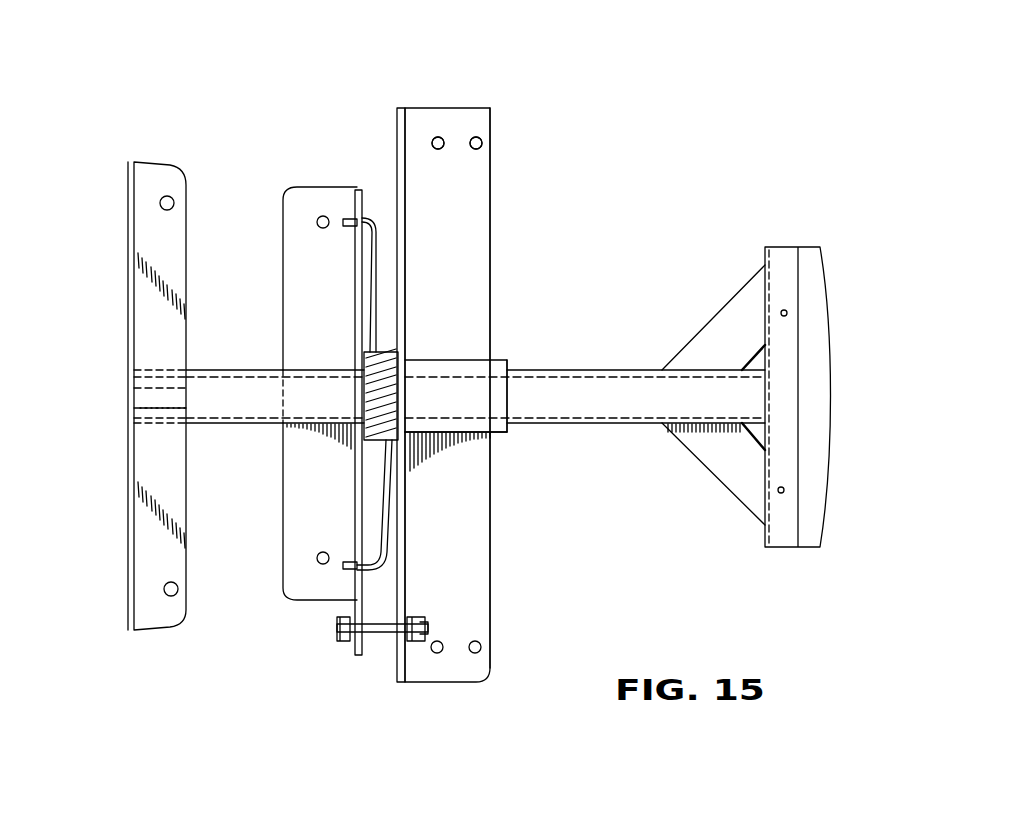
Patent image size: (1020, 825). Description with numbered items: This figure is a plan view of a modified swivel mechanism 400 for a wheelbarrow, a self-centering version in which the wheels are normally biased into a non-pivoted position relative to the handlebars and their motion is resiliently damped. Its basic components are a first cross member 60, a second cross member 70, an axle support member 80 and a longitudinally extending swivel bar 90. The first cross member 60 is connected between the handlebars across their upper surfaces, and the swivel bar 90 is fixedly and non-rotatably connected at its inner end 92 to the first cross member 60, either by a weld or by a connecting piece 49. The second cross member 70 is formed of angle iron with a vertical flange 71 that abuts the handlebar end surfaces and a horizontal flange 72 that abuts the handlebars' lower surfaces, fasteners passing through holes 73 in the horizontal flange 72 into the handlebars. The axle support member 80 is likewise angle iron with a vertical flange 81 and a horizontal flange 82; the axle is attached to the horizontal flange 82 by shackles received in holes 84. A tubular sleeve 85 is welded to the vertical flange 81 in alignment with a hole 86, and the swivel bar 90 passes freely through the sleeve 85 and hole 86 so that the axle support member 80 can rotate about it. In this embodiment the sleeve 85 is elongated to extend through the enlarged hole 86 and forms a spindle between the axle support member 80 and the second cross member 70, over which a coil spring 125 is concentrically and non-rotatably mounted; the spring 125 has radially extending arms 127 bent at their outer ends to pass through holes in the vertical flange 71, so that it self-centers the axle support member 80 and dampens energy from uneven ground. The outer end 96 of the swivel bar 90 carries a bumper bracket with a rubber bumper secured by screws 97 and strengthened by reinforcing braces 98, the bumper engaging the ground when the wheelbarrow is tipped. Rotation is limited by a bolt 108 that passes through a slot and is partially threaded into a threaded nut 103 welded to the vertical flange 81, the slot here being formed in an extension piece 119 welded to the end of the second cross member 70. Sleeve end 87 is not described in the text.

The modified swivel mechanism 400 is at (524, 134).
The first cross member 60 is at (155, 612).
The inner end 92 is at (165, 370).
The connecting piece 49 is at (160, 415).
The second cross member 70 is at (290, 597).
The vertical flange 71 is at (356, 492).
The horizontal flange 72 is at (308, 560).
The holes 73 is at (318, 553).
The coil spring 125 is at (388, 330).
The radially extending arms 127 is at (372, 225).
The axle support member 80 is at (447, 664).
The vertical flange 81 is at (405, 250).
The horizontal flange 82 is at (470, 530).
The holes 84 is at (476, 136).
The tubular bushing or sleeve 85 is at (480, 385).
The hole 86 is at (440, 375).
The collar end 87 is at (510, 358).
The swivel bar 90 is at (618, 410).
The outer end 96 is at (818, 270).
The screws 97 is at (784, 490).
The reinforcing braces 98 is at (690, 455).
The threaded nut 103 is at (410, 617).
The bolt 108 is at (372, 632).
The extension piece 119 is at (352, 641).